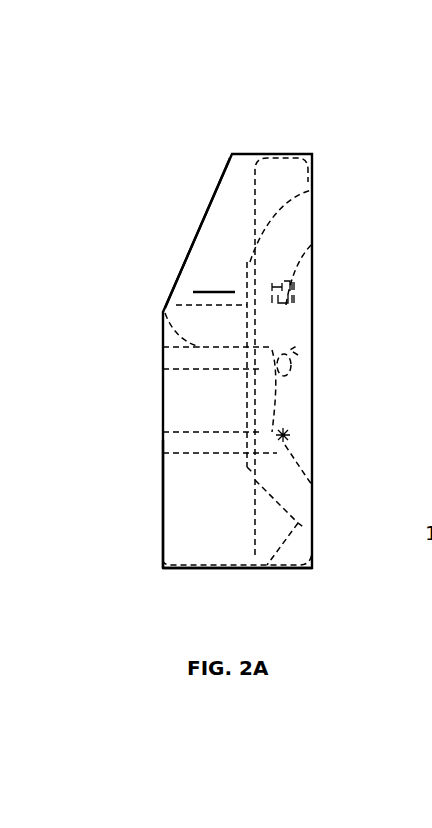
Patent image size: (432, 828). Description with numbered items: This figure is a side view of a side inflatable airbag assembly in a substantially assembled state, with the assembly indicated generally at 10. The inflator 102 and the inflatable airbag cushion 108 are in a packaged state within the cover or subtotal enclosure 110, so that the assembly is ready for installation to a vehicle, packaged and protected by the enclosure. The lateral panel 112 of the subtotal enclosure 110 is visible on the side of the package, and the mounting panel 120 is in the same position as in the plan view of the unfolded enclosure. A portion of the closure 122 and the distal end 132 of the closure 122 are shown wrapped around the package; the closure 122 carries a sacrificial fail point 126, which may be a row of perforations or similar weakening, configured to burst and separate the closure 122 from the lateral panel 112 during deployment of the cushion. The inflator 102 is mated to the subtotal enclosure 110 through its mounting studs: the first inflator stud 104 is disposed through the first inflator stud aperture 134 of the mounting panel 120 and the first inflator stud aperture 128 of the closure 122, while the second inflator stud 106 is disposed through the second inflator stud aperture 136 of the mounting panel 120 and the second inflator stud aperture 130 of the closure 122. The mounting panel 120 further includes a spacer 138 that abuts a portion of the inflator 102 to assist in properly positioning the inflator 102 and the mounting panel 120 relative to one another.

The cartridge assembly 10 is at (368, 102).
The inflator 102 is at (289, 152).
The first inflator stud 104 is at (300, 366).
The second inflator stud 106 is at (296, 436).
The inflatable airbag cushion 108 is at (176, 290).
The subtotal enclosure 110 is at (163, 522).
The lateral panel 112 is at (215, 278).
The mounting panel 120 is at (265, 568).
The closure 122 is at (163, 318).
The sacrificial fail point 126 is at (163, 360).
The first inflator stud aperture 128 is at (298, 355).
The second inflator stud aperture 130 is at (312, 485).
The distal end 132 is at (298, 388).
The first inflator stud aperture 134 is at (312, 283).
The second inflator stud aperture 136 is at (300, 446).
The spacer 138 is at (313, 238).